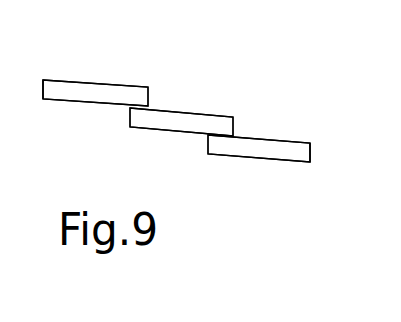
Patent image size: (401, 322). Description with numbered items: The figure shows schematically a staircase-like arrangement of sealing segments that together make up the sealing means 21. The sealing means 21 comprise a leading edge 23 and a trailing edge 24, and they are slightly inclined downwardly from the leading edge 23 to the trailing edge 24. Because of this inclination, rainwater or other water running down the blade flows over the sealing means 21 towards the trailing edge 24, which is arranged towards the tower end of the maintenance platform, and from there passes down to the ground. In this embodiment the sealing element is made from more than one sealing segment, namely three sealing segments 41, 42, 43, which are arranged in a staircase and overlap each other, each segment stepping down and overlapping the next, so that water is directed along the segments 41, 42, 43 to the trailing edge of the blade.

The sealing means 21 is at (144, 65).
The leading edge 23 is at (35, 90).
The trailing edge 24 is at (302, 145).
The sealing segment 41 is at (84, 95).
The sealing segment 42 is at (164, 124).
The sealing segment 43 is at (245, 150).